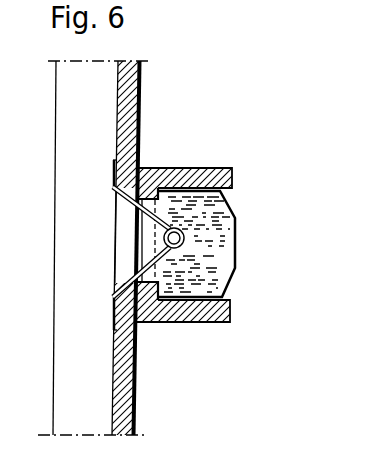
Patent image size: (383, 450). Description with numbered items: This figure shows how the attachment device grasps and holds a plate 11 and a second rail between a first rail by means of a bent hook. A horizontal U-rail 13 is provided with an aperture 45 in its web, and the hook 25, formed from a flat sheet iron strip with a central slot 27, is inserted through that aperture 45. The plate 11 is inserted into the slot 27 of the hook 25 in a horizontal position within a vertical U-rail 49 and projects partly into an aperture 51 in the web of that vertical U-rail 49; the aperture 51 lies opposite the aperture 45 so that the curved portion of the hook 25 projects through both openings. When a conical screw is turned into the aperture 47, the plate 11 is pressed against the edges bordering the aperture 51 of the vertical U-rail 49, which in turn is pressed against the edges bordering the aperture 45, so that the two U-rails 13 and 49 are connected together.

The plate 11 is at (214, 252).
The rail 13 is at (132, 105).
The hook 25 is at (120, 206).
The slot 27 is at (121, 275).
The aperture 45 is at (125, 238).
The aperture 47 is at (184, 236).
The vertical U-rail 49 is at (184, 168).
The aperture 51 is at (145, 323).